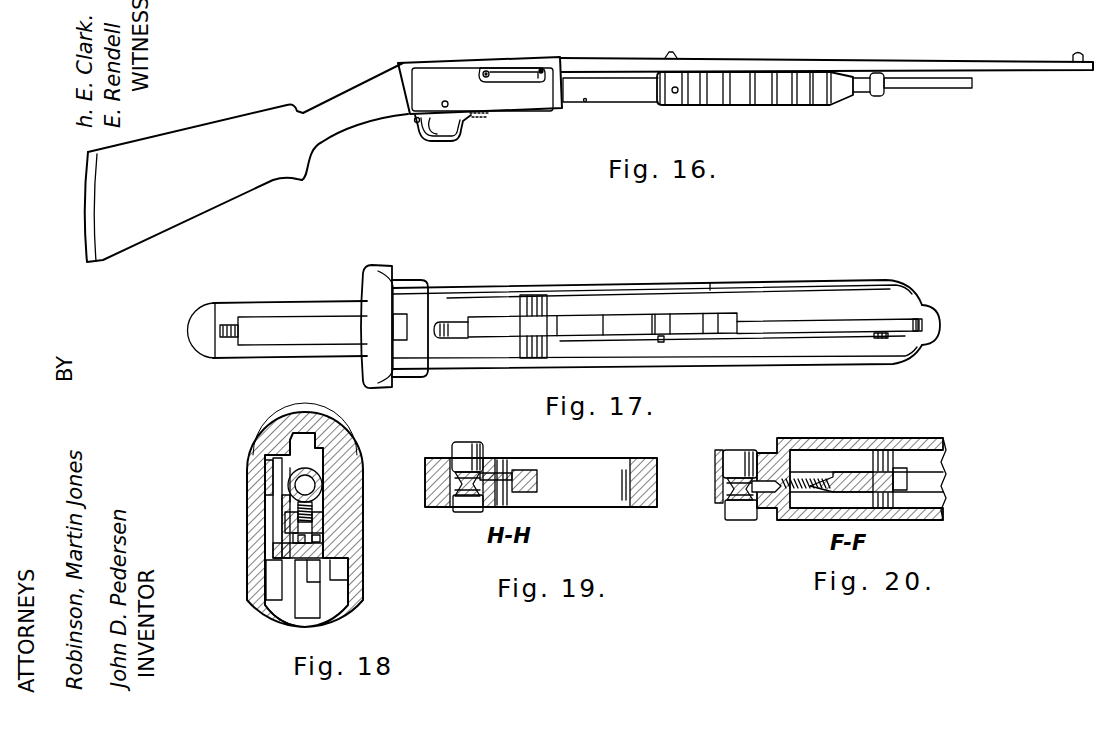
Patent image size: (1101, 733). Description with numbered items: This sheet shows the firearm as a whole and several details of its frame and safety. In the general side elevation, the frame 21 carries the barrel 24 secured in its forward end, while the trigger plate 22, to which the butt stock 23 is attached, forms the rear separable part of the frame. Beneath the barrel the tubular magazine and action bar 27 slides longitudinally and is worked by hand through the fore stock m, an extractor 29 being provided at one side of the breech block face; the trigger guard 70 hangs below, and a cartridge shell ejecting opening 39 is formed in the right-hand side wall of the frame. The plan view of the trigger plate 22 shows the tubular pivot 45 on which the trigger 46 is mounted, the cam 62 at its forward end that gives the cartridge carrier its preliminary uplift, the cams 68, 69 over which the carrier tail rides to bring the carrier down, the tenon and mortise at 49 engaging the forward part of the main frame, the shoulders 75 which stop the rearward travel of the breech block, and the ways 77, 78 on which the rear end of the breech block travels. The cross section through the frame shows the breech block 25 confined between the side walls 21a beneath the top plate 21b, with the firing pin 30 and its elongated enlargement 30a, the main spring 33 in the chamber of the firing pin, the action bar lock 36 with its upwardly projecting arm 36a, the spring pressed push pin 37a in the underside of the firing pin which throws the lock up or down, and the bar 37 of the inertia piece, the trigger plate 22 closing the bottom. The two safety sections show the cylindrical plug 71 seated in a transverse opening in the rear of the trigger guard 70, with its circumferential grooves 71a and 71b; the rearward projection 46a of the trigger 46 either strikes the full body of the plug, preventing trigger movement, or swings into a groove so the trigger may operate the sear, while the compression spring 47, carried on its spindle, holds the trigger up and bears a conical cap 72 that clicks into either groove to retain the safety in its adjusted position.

In FIG. 16, the frame 21 is at (480, 85).
In FIG. 18, the side walls 21a is at (252, 543).
In FIG. 18, the top plate 21b is at (277, 427).
In FIG. 17, the trigger plate 22 is at (625, 300).
In FIG. 18, the trigger plate 22 is at (281, 618).
In FIG. 16, the butt stock 23 is at (246, 162).
In FIG. 16, the barrel 24 is at (628, 67).
In FIG. 16, the breech block 25 is at (500, 73).
In FIG. 18, the breech block 25 is at (327, 453).
In FIG. 16, the action bar 27 is at (610, 92).
In FIG. 16, the extractor 29 is at (877, 97).
In FIG. 18, the firing pin 30 is at (343, 467).
In FIG. 18, the elongated enlargement 30a is at (327, 523).
In FIG. 18, the main spring 33 is at (322, 480).
In FIG. 18, the action bar lock 36 is at (347, 560).
In FIG. 18, the upwardly projecting arm 36a is at (282, 510).
In FIG. 18, the push pin 37 is at (252, 472).
In FIG. 18, the push pin 37a is at (327, 542).
In FIG. 16, the cartridge shell ejecting opening 39 is at (512, 80).
In FIG. 17, the tubular pivot 45 is at (530, 302).
In FIG. 20, the tubular pivot 45 is at (880, 453).
In FIG. 17, the trigger 46 is at (676, 328).
In FIG. 19, the trigger 46 is at (537, 473).
In FIG. 19, the rearward projection 46a is at (507, 465).
In FIG. 20, the compression spring 47 is at (796, 478).
In FIG. 17, the tenon and mortise 49 is at (938, 330).
In FIG. 17, the cam 62 is at (923, 311).
In FIG. 17, the cam 68 is at (661, 343).
In FIG. 17, the cam 69 is at (884, 340).
In FIG. 16, the trigger guard 70 is at (463, 130).
In FIG. 19, the trigger guard 70 is at (541, 482).
In FIG. 20, the trigger guard 70 is at (715, 463).
In FIG. 19, the cylindrical plug 71 is at (462, 452).
In FIG. 20, the cylindrical plug 71 is at (740, 458).
In FIG. 19, the circumferential groove 71a is at (450, 465).
In FIG. 20, the circumferential groove 71a is at (727, 488).
In FIG. 19, the circumferential groove 71b is at (450, 497).
In FIG. 20, the circumferential groove 71b is at (732, 500).
In FIG. 20, the cap 72 is at (767, 493).
In FIG. 17, the shoulders 75 is at (403, 279).
In FIG. 17, the ways 77 is at (688, 290).
In FIG. 17, the ways 78 is at (467, 367).
In FIG. 16, the fore stock m is at (747, 107).